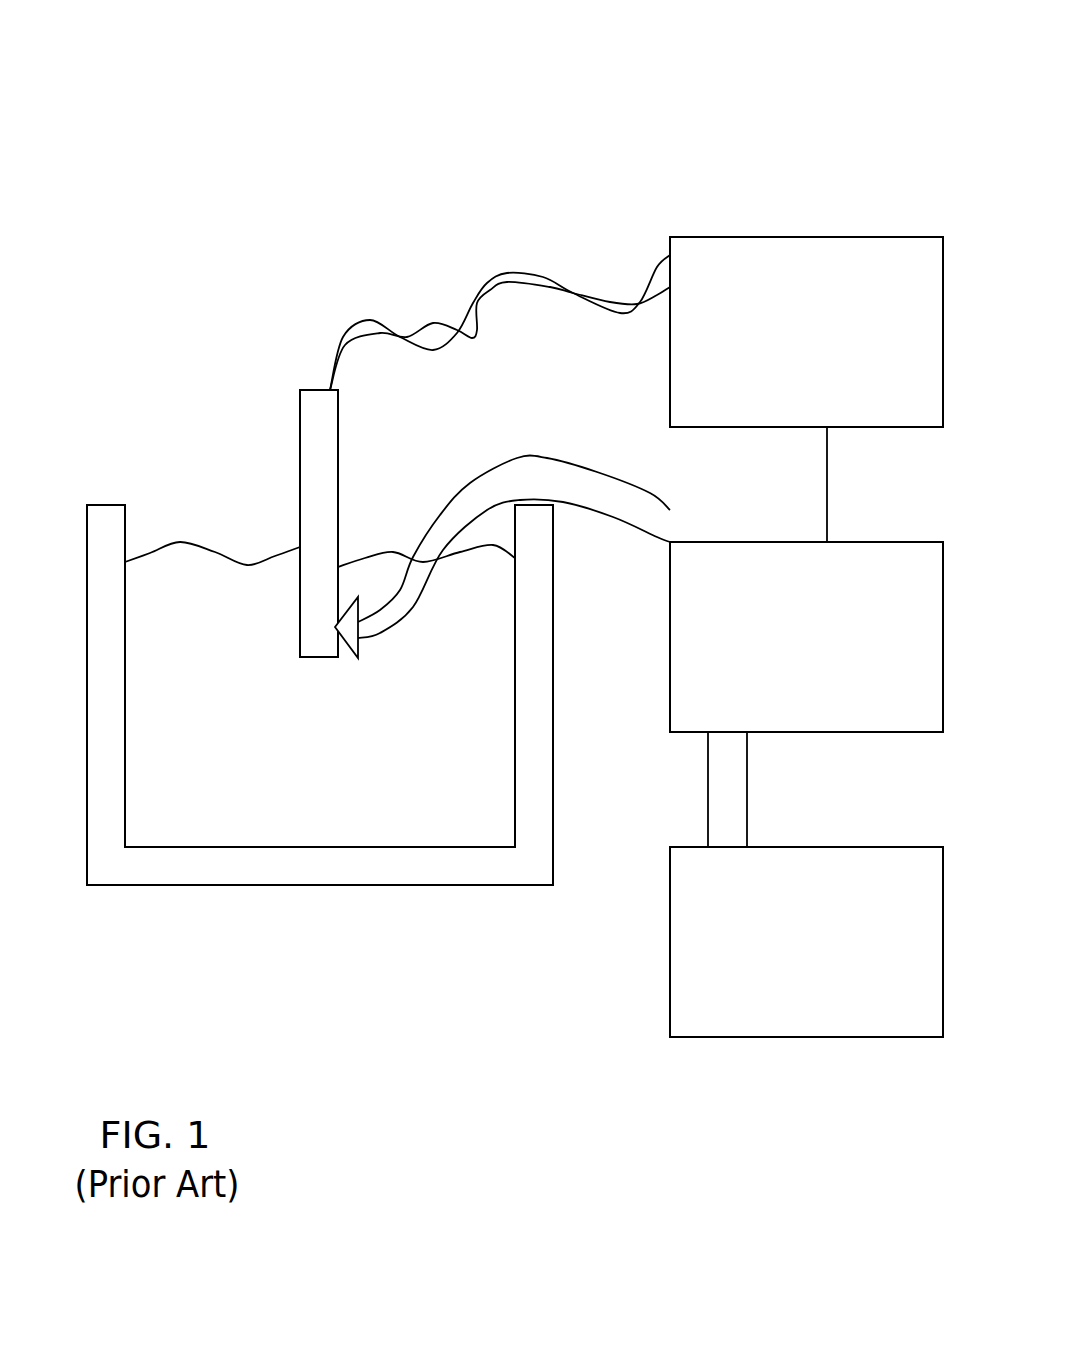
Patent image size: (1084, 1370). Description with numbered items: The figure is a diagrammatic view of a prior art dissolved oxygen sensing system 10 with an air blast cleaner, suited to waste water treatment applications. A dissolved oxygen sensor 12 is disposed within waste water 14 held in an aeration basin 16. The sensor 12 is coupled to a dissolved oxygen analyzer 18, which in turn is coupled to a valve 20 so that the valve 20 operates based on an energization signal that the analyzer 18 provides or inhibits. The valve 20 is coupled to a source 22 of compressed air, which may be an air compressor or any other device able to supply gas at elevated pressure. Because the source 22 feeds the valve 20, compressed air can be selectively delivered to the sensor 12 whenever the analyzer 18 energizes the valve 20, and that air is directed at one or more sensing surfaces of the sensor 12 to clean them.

The dissolved oxygen sensing system 10 is at (425, 183).
The dissolved oxygen sensor 12 is at (300, 448).
The waste water 14 is at (477, 770).
The aeration basin 16 is at (338, 885).
The dissolved oxygen analyzer 18 is at (710, 427).
The valve 20 is at (835, 732).
The source of compressed air 22 is at (728, 1037).